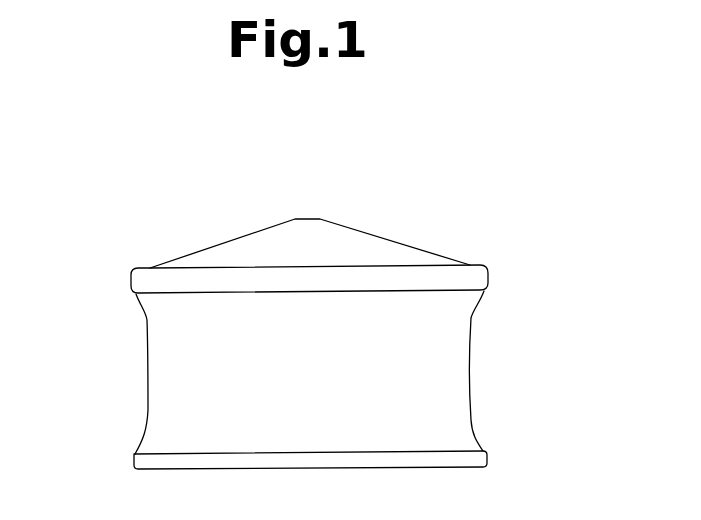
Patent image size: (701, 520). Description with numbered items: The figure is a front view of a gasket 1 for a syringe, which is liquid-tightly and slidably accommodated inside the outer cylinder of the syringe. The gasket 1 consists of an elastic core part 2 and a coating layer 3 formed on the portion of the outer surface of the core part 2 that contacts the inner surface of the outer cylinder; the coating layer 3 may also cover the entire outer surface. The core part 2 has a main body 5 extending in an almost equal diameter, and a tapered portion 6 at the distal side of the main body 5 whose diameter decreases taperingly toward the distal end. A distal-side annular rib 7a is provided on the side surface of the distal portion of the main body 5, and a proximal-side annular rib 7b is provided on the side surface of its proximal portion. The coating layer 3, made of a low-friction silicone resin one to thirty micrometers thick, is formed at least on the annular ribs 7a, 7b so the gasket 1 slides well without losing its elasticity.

The gasket 1 is at (348, 309).
The core part 2 is at (462, 365).
The coating layer 3 is at (183, 353).
The main body 5 is at (175, 389).
The tapered portion 6 is at (222, 251).
The distal-side annular rib 7a is at (485, 278).
The proximal-side annular rib 7b is at (483, 458).